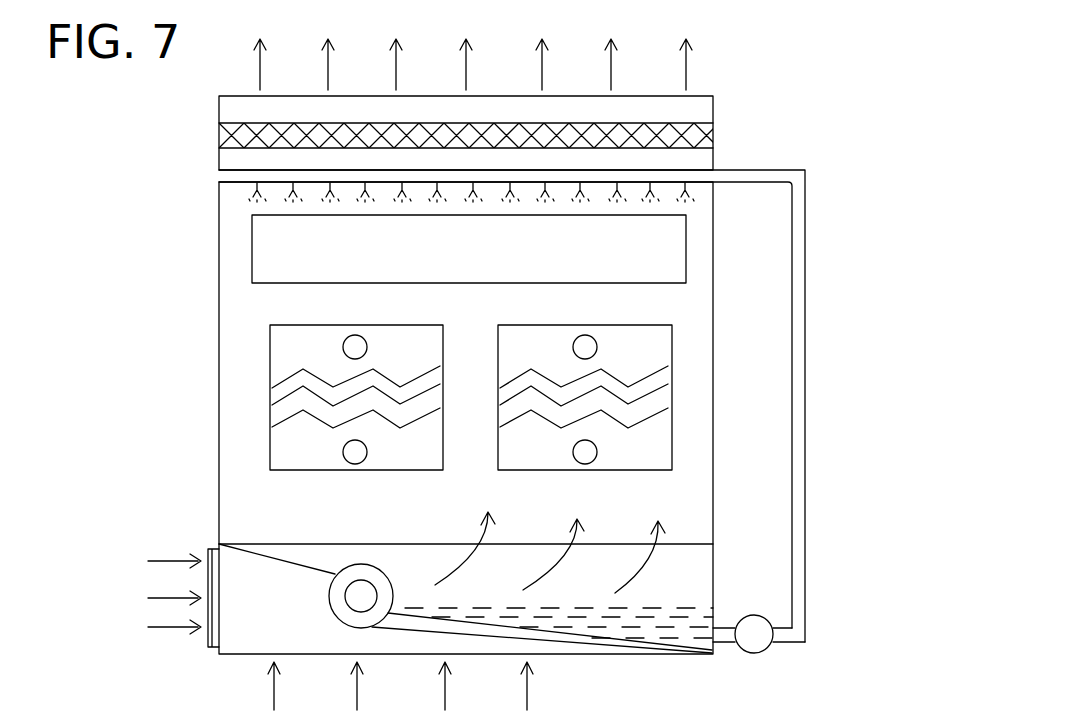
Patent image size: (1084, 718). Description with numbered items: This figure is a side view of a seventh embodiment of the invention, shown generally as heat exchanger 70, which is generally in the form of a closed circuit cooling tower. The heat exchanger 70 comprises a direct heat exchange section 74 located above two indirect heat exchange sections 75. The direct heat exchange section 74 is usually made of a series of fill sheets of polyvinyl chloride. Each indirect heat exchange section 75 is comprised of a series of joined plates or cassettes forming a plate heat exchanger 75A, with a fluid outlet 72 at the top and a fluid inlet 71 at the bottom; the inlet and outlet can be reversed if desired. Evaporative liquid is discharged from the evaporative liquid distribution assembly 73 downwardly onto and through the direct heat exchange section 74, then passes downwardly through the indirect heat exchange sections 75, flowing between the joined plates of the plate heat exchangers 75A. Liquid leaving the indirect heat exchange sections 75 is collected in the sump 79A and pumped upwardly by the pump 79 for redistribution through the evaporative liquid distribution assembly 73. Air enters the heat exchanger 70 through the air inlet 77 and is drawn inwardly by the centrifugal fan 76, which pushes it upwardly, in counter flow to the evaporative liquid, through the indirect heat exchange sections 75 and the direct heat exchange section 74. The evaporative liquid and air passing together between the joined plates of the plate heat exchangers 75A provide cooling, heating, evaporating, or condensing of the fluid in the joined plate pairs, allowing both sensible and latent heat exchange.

The heat exchanger 70 is at (170, 152).
The fluid inlet 71 is at (355, 454).
The fluid outlet 72 is at (357, 344).
The evaporative liquid distribution assembly 73 is at (220, 177).
The direct heat exchange section 74 is at (684, 248).
The indirect heat exchange section 75 is at (270, 392).
The plate heat exchanger 75A is at (651, 378).
The centrifugal fan 76 is at (330, 598).
The air inlet 77 is at (207, 549).
The pump 79 is at (760, 642).
The sump 79A is at (666, 607).